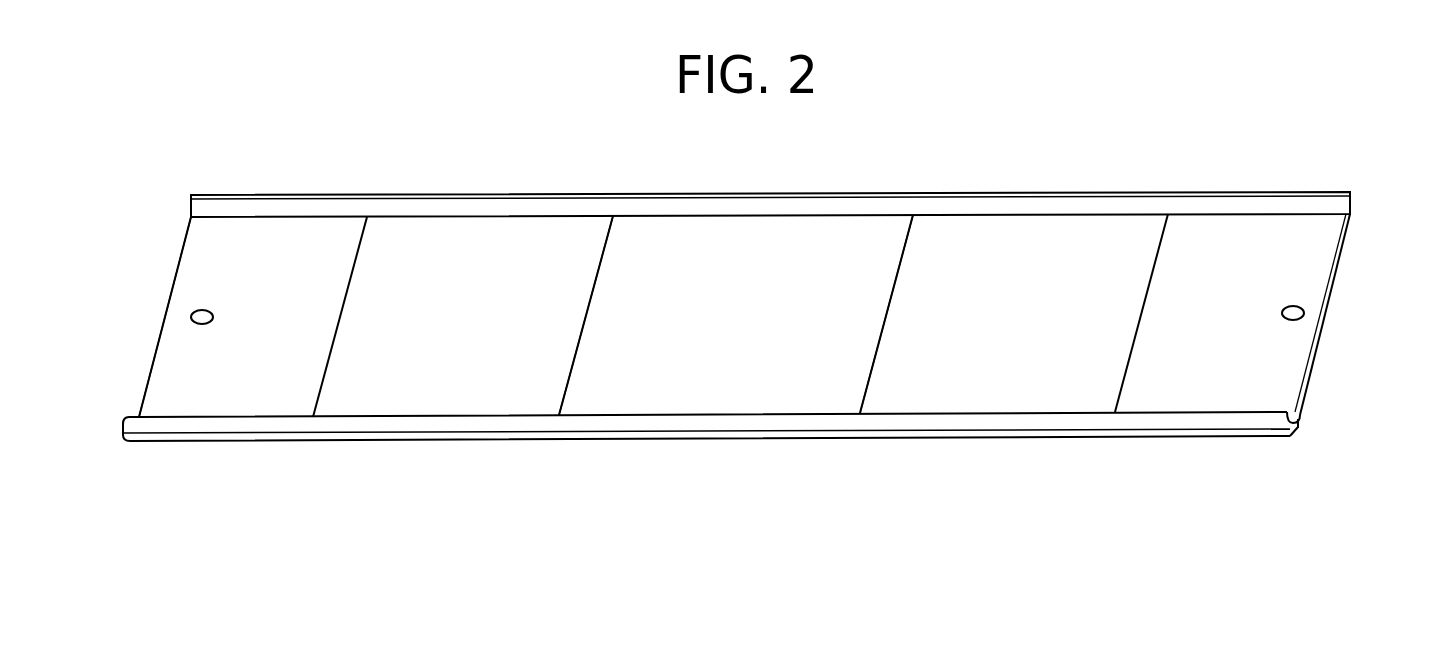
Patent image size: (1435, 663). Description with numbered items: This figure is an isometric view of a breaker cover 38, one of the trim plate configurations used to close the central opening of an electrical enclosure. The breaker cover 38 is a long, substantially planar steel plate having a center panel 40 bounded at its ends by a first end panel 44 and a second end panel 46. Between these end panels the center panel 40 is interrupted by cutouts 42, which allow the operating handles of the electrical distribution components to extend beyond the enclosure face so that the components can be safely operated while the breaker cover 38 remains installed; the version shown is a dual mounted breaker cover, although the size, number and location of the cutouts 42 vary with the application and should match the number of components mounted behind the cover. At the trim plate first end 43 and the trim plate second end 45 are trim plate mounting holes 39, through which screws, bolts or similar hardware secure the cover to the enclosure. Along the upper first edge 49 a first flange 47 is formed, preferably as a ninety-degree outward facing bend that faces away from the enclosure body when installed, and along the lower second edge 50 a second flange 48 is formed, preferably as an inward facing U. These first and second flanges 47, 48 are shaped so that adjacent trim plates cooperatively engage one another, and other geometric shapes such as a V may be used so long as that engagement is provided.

The breaker cover 38 is at (1142, 629).
The trim plate mounting holes 39 is at (197, 312).
The center panel 40 is at (682, 392).
The cutout 42 is at (1053, 232).
The trim plate first end 43 is at (1325, 310).
The first end panel 44 is at (1232, 388).
The trim plate second end 45 is at (182, 395).
The second end panel 46 is at (275, 250).
The first flange 47 is at (1207, 207).
The second flange 48 is at (1143, 420).
The first edge 49 is at (1368, 193).
The second edge 50 is at (1310, 430).